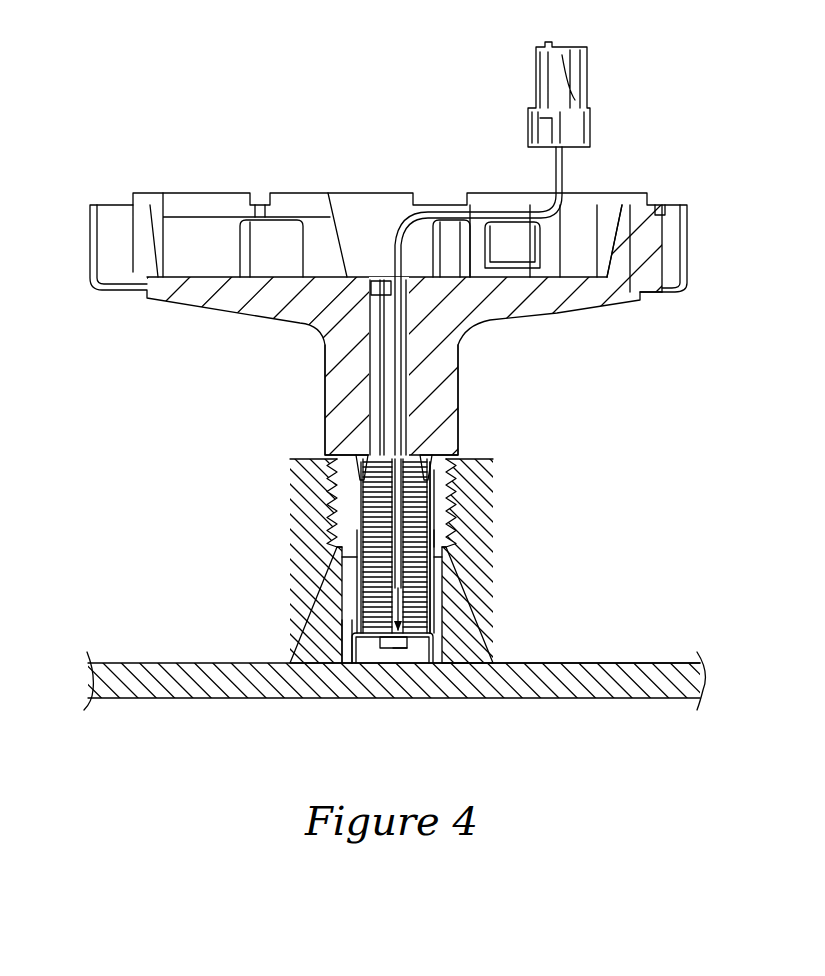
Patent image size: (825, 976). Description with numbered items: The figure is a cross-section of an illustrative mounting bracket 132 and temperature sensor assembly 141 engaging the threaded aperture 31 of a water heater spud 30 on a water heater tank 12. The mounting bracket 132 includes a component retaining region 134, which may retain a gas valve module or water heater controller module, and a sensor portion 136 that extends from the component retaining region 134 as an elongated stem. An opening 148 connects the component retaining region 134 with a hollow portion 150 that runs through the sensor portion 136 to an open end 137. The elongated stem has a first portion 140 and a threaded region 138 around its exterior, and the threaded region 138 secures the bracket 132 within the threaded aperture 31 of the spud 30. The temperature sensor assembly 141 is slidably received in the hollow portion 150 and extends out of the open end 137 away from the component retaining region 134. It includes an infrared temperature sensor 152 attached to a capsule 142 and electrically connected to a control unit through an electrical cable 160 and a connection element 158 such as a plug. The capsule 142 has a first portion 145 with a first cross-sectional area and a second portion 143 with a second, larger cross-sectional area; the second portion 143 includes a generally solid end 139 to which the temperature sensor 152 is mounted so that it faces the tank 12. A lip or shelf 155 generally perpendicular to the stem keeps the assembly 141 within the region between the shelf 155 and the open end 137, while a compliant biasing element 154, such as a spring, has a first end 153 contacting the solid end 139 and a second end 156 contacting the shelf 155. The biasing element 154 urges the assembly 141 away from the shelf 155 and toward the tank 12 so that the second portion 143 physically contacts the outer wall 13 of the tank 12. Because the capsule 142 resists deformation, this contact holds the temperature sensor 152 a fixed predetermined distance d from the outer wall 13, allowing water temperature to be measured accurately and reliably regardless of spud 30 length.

The water heater tank 12 is at (563, 688).
The outer wall 13 is at (617, 663).
The water heater spud 30 is at (485, 549).
The threaded aperture 31 is at (452, 530).
The mounting bracket 132 is at (692, 71).
The component retaining region 134 is at (224, 218).
The sensor portion 136 is at (278, 392).
The open end 137 is at (362, 572).
The threaded region 138 is at (333, 498).
The solid end 139 is at (440, 648).
The first portion 140 is at (460, 422).
The temperature sensor assembly 141 is at (350, 622).
The capsule 142 is at (430, 606).
The second portion 143 is at (355, 645).
The first portion 145 is at (360, 583).
The opening 148 is at (380, 266).
The hollow portion 150 is at (427, 518).
The temperature sensor 152 is at (387, 650).
The first end 153 is at (430, 590).
The biasing element 154 is at (360, 508).
The shelf 155 is at (358, 462).
The second end 156 is at (433, 470).
The connection element 158 is at (590, 122).
The electrical cable 160 is at (356, 601).
The predetermined distance d is at (400, 667).